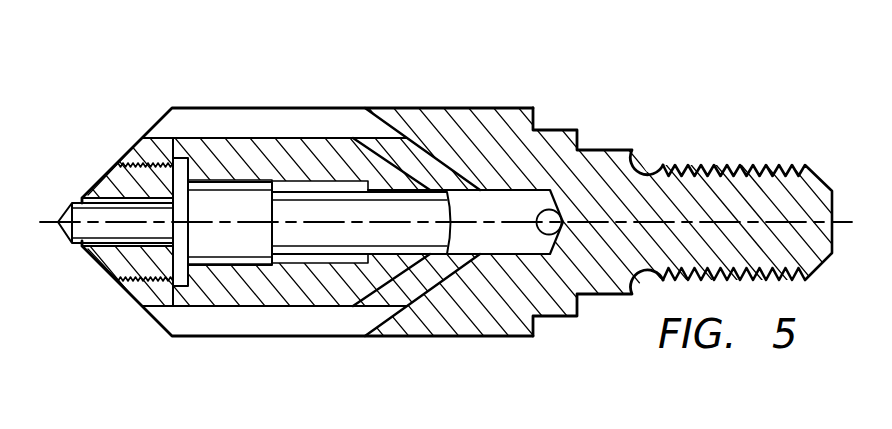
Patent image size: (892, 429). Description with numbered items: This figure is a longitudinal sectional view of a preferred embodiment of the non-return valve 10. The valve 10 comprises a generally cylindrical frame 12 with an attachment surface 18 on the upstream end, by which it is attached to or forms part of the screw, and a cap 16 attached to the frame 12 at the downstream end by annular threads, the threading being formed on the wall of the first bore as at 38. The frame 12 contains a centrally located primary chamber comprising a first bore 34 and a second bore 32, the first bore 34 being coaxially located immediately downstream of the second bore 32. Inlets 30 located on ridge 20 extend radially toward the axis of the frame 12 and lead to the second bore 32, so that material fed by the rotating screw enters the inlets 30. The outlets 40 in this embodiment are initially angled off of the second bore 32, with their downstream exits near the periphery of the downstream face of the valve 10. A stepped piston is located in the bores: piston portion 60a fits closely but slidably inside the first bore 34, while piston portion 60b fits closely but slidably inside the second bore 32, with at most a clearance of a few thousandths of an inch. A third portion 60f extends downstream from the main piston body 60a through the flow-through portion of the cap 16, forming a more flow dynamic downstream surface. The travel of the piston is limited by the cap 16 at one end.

The non-return valve 10 is at (152, 84).
The frame 12 is at (432, 108).
The cap 16 is at (95, 178).
The attachment surface 18 is at (748, 165).
The ridge 20 is at (553, 124).
The inlet 30 is at (540, 228).
The second bore 32 is at (505, 218).
The first bore 34 is at (300, 185).
The threads 38 is at (147, 291).
The outlet 40 is at (252, 108).
The piston portion 60a is at (224, 250).
The piston portion 60b is at (322, 240).
The third portion 60f is at (98, 240).